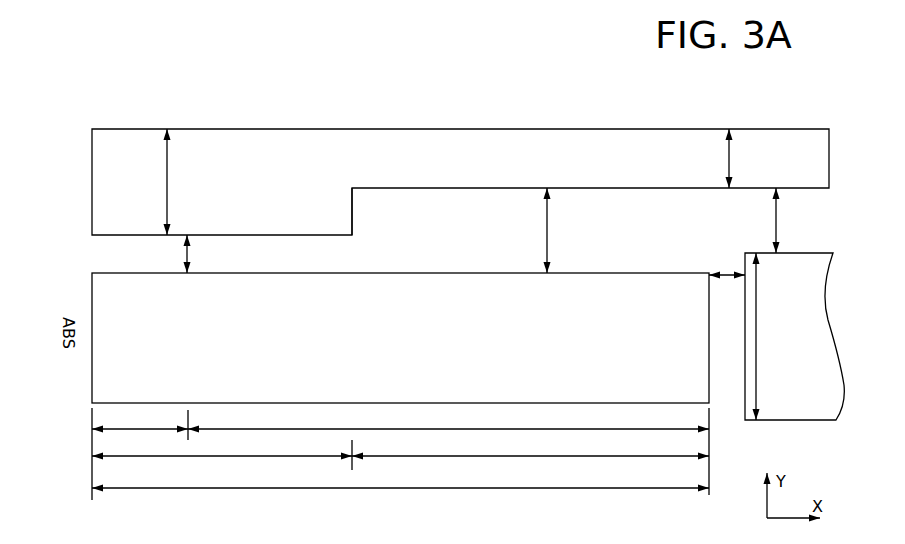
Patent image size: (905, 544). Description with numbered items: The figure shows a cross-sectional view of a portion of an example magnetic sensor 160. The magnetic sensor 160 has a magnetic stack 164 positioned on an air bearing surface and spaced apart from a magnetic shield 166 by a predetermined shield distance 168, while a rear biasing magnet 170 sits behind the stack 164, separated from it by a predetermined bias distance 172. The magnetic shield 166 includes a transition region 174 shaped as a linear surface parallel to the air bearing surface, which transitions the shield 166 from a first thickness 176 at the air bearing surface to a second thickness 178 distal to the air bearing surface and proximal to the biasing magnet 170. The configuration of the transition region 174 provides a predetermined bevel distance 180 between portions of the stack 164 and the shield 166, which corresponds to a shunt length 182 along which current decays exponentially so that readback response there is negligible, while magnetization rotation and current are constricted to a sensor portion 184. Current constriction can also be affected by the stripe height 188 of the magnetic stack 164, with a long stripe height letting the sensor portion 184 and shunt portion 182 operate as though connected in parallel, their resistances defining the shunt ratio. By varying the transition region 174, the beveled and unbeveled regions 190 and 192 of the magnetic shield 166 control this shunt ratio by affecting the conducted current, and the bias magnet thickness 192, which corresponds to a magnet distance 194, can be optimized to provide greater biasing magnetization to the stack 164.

The magnetic sensor 160 is at (136, 54).
The magnetic stack 164 is at (400, 338).
The magnetic shield 166 is at (460, 182).
The shield distance 168 is at (207, 254).
The rear biasing magnet 170 is at (794, 336).
The bias distance 172 is at (727, 262).
The transition region 174 is at (346, 209).
The first thickness 176 is at (187, 182).
The second thickness 178 is at (709, 158).
The bevel distance 180 is at (566, 230).
The shunt length 182 is at (448, 419).
The sensor portion 184 is at (140, 419).
The stripe height 188 is at (400, 499).
The beveled region 190 is at (222, 468).
The unbeveled region 192 is at (574, 367).
The magnet distance 194 is at (796, 220).